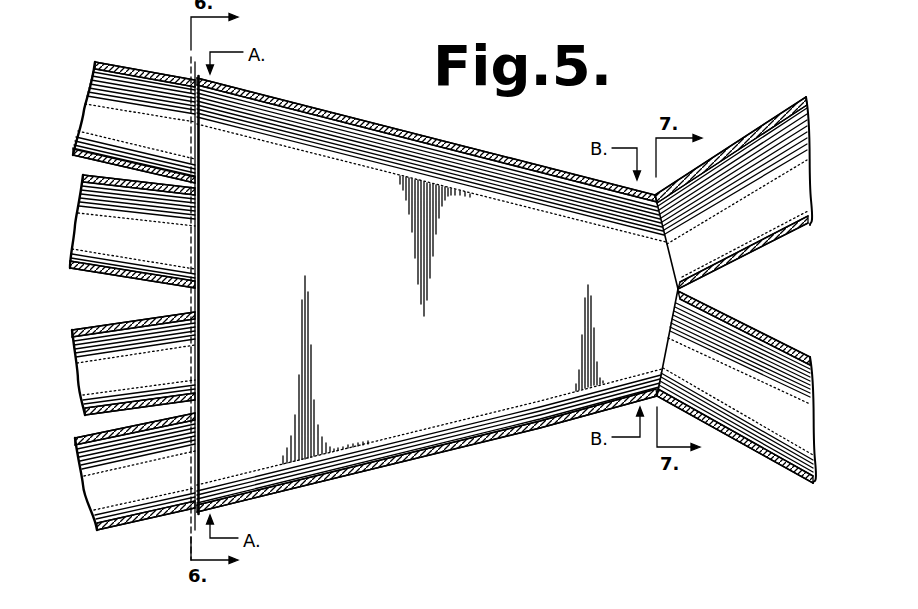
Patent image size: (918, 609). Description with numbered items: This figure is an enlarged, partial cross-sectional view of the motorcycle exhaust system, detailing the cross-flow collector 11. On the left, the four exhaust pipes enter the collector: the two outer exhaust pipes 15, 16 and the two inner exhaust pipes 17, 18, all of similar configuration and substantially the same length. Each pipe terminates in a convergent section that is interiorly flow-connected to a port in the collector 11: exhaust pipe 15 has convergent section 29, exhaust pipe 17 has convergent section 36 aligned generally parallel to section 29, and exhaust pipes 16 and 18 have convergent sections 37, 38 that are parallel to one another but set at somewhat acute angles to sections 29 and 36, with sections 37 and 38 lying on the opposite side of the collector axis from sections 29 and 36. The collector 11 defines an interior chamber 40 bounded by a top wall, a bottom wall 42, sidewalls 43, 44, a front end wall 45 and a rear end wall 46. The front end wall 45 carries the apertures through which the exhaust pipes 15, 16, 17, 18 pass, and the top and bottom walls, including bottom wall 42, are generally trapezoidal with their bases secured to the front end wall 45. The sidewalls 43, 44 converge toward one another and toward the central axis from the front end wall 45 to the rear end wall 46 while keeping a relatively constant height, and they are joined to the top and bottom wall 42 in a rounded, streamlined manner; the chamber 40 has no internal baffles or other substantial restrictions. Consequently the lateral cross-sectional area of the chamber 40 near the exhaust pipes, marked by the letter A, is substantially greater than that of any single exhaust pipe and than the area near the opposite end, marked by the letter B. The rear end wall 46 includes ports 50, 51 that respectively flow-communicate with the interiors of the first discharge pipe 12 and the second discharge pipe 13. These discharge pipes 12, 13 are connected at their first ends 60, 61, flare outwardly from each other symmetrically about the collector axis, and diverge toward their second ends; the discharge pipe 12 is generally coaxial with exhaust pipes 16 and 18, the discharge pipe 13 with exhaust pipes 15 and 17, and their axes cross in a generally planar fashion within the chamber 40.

The cross-flow collector 11 is at (421, 116).
The first discharge pipe 12 is at (772, 452).
The second discharge pipe 13 is at (783, 116).
The outer exhaust pipe 15 is at (112, 530).
The outer exhaust pipe 16 is at (111, 59).
The inner exhaust pipe 17 is at (78, 436).
The inner exhaust pipe 18 is at (83, 176).
The convergent section 29 is at (144, 526).
The convergent section 36 is at (80, 328).
The convergent section 37 is at (131, 64).
The convergent section 38 is at (111, 278).
The interior chamber 40 is at (400, 461).
The bottom wall 42 is at (431, 304).
The sidewall 43 is at (348, 118).
The sidewall 44 is at (312, 487).
The front end wall 45 is at (200, 292).
The rear end wall 46 is at (676, 289).
The port 50 is at (742, 393).
The port 51 is at (733, 187).
The first end 60 is at (700, 297).
The first end 61 is at (708, 278).